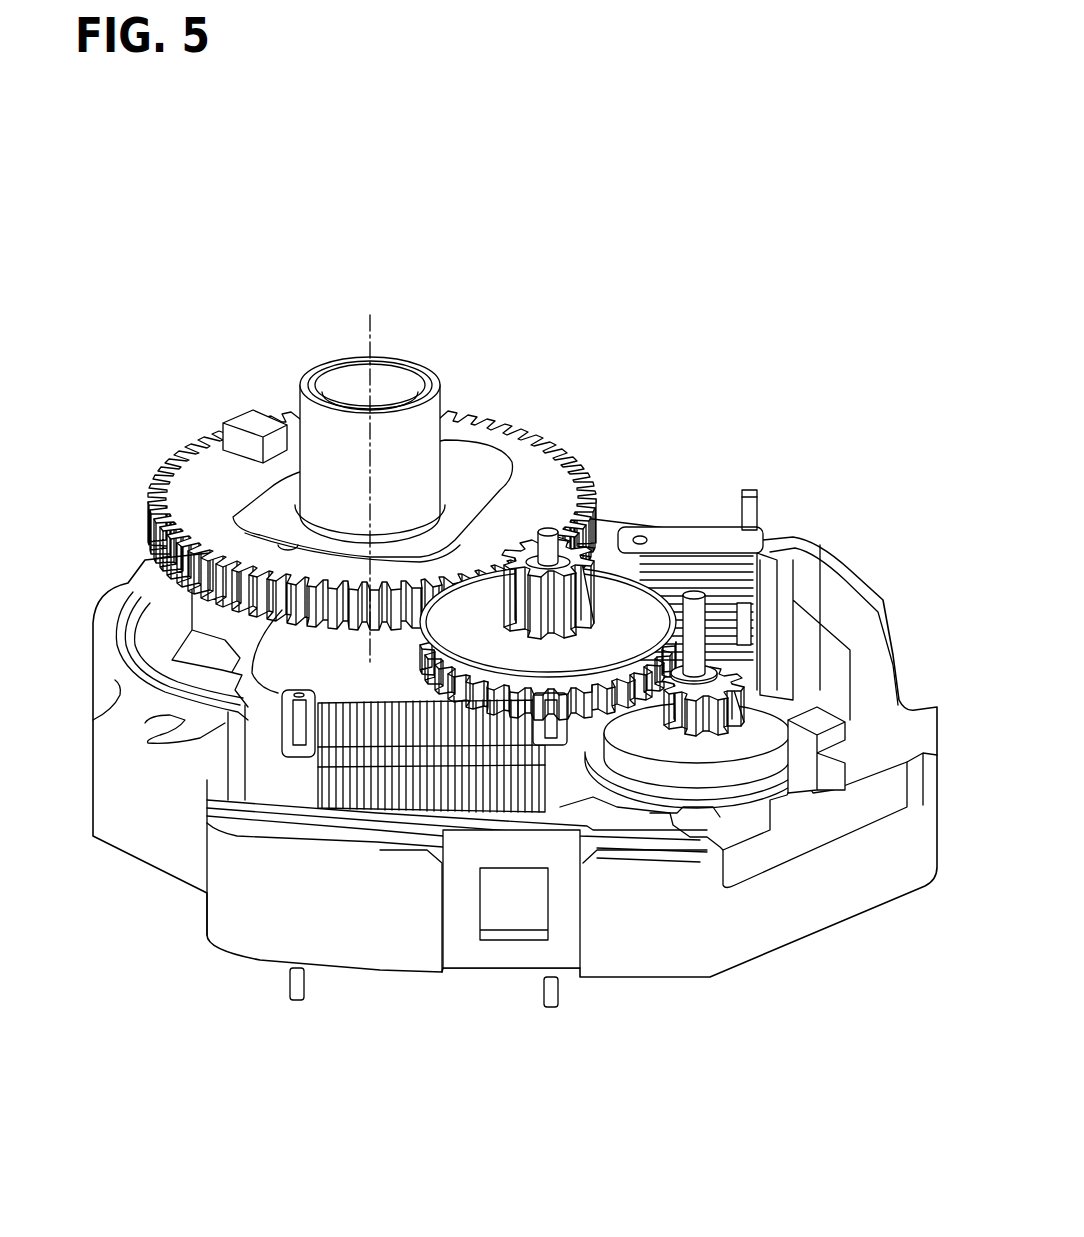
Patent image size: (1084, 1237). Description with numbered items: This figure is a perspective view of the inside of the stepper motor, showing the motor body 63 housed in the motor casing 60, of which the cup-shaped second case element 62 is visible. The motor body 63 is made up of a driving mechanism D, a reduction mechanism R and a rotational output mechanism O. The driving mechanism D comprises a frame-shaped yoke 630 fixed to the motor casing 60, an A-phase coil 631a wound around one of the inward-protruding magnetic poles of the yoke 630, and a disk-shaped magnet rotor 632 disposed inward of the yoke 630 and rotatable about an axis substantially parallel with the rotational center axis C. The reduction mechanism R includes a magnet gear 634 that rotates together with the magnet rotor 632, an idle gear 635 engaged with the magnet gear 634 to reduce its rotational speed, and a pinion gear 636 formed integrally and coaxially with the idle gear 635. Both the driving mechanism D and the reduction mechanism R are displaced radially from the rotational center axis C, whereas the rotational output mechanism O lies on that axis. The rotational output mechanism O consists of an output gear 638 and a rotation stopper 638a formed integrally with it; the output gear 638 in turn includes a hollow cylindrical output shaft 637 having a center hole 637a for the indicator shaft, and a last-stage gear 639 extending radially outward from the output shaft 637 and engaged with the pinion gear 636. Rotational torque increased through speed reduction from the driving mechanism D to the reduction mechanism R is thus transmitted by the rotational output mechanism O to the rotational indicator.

The motor casing 60 is at (501, 761).
The second case element 62 is at (501, 761).
The motor body 63 is at (830, 388).
The yoke 630 is at (93, 823).
The A-phase coil 631a is at (402, 790).
The magnet rotor 632 is at (787, 743).
The magnet gear 634 is at (745, 712).
The idle gear 635 is at (540, 670).
The pinion gear 636 is at (670, 640).
The output shaft 637 is at (338, 472).
The center hole 637a is at (340, 385).
The output gear 638 is at (319, 472).
The rotation stopper 638a is at (233, 418).
The last-stage gear 639 is at (203, 518).
The rotational output mechanism O is at (570, 430).
The reduction mechanism R is at (660, 567).
The driving mechanism D is at (808, 667).
The rotational center axis C is at (372, 326).